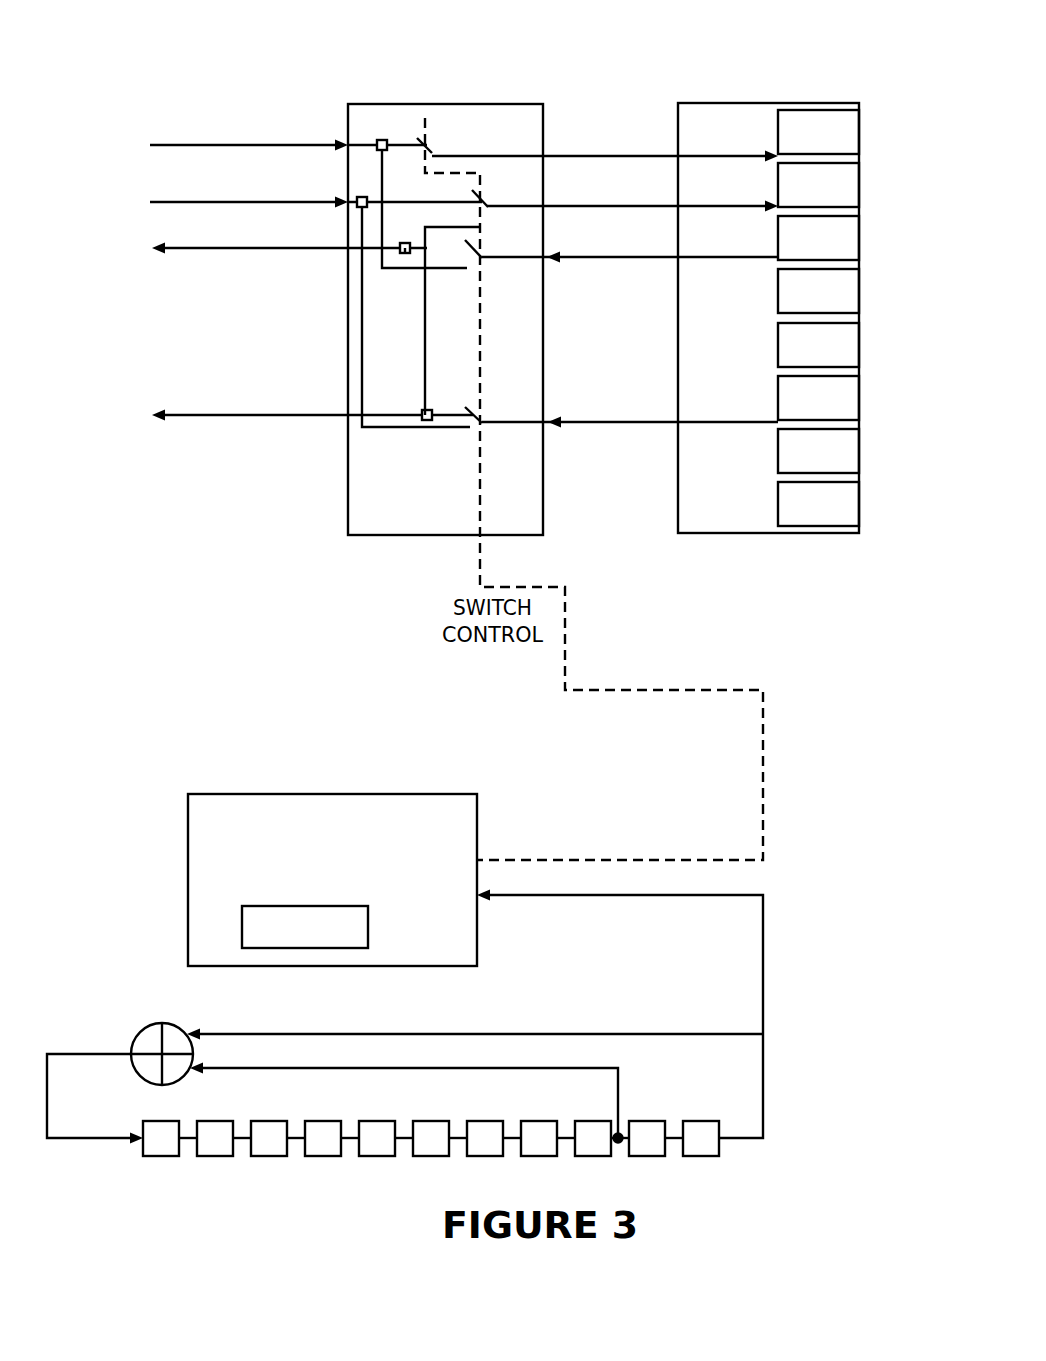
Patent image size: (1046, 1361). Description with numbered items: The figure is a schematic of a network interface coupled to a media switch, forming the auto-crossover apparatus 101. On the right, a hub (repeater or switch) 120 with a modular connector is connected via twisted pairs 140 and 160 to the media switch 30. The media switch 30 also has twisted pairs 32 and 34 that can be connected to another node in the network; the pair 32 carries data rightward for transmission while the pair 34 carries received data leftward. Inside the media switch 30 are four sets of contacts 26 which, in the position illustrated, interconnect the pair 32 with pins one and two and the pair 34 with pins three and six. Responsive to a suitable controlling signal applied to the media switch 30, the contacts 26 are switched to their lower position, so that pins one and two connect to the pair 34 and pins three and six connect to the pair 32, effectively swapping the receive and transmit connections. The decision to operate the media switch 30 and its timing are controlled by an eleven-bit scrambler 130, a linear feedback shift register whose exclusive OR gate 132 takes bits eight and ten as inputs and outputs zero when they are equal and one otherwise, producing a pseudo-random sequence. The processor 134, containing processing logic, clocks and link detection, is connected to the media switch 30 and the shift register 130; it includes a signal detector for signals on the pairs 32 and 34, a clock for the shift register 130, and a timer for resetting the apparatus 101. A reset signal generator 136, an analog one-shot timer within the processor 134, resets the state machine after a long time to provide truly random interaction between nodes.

The contact 26 is at (434, 149).
The media switch 30 is at (371, 537).
The twisted pair 32 is at (138, 145).
The twisted pair 34 is at (143, 248).
The apparatus 101 is at (232, 589).
The hub (repeater or switch) 120 is at (860, 528).
The scrambler 130 is at (772, 1105).
The exclusive OR gate 132 is at (133, 1027).
The processor 134 is at (427, 975).
The reset signal generator 136 is at (242, 930).
The twisted pair 140 is at (652, 154).
The twisted pair 160 is at (580, 268).